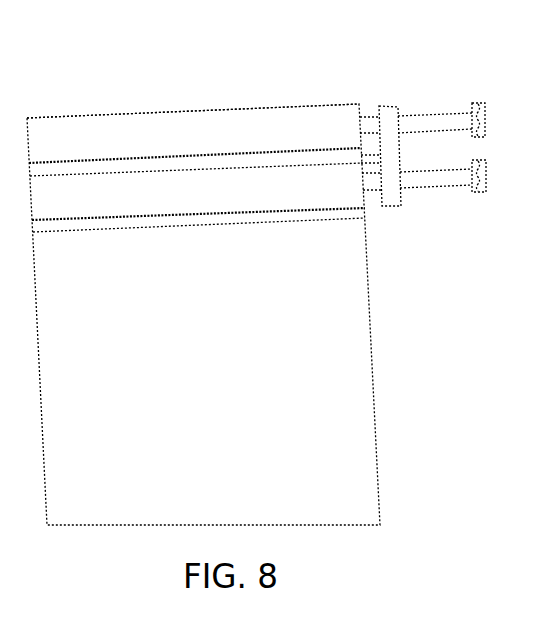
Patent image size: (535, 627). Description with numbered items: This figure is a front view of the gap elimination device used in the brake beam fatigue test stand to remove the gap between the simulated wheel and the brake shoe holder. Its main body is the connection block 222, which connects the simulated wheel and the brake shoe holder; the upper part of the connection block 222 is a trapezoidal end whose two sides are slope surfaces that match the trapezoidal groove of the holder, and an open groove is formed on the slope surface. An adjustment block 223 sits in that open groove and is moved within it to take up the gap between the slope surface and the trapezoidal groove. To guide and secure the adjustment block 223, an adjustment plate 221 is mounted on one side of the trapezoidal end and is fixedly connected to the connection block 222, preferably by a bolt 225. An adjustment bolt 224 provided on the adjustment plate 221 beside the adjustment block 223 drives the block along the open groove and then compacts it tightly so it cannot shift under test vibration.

The adjustment plate 221 is at (384, 116).
The connection block 222 is at (292, 322).
The adjustment block 223 is at (135, 133).
The adjustment bolt 224 is at (447, 115).
The bolt 225 is at (362, 152).